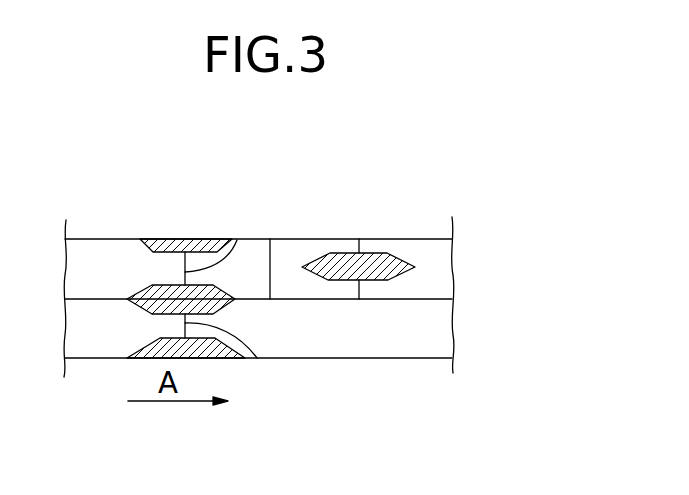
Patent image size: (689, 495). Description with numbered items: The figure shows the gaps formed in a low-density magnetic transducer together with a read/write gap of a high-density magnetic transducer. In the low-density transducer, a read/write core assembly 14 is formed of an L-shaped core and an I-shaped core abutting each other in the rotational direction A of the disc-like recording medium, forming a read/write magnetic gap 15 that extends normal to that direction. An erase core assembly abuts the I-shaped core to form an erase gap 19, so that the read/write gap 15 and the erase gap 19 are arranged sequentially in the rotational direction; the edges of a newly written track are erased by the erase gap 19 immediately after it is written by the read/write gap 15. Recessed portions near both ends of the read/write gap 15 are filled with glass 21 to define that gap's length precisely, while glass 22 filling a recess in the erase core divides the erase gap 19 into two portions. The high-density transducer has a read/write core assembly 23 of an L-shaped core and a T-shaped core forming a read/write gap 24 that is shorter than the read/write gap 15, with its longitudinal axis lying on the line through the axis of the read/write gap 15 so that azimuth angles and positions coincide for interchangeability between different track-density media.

The read/write core assembly 14 is at (97, 240).
The read/write magnetic gap 15 is at (240, 239).
The erase gap 19 is at (360, 247).
The glass 21 is at (157, 287).
The glass 22 is at (333, 263).
The read/write core assembly 23 is at (92, 347).
The read/write gap 24 is at (257, 358).